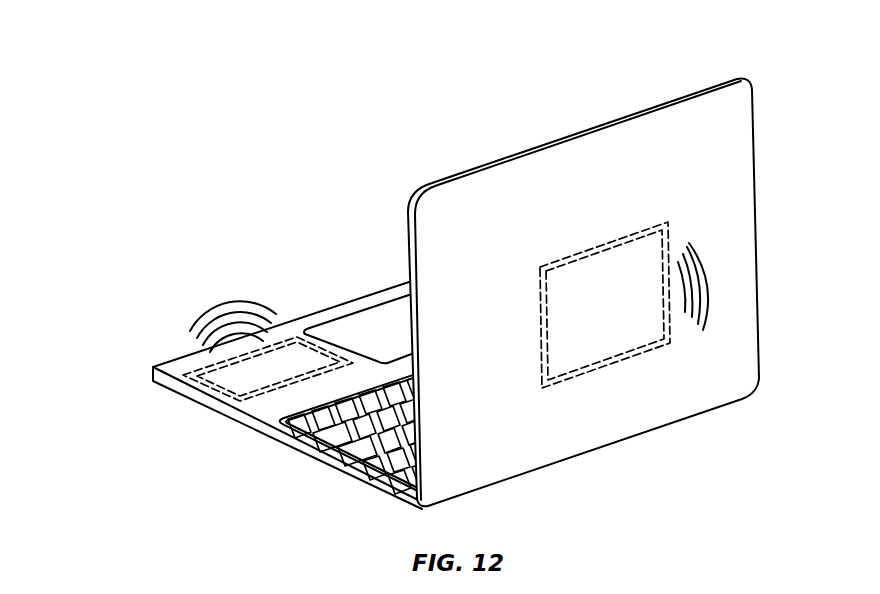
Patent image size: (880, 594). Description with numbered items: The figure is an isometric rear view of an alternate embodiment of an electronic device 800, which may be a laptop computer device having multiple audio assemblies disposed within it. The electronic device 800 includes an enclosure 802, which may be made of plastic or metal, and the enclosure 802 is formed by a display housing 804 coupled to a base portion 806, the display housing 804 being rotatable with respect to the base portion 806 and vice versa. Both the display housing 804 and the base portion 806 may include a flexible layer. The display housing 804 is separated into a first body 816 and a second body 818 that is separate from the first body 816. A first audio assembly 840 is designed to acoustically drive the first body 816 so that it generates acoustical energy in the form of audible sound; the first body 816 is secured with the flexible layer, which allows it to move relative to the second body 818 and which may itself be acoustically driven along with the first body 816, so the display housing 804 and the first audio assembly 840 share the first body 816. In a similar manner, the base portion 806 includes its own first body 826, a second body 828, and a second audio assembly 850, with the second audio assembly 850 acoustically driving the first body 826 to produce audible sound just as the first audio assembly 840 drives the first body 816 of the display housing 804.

The electronic device 800 is at (430, 272).
The enclosure 802 is at (430, 286).
The display housing 804 is at (601, 292).
The base portion 806 is at (239, 320).
The first body 816 is at (588, 318).
The second body 818 is at (560, 196).
The first body 826 is at (288, 352).
The second body 828 is at (153, 379).
The first audio assembly 840 is at (692, 218).
The second audio assembly 850 is at (180, 348).